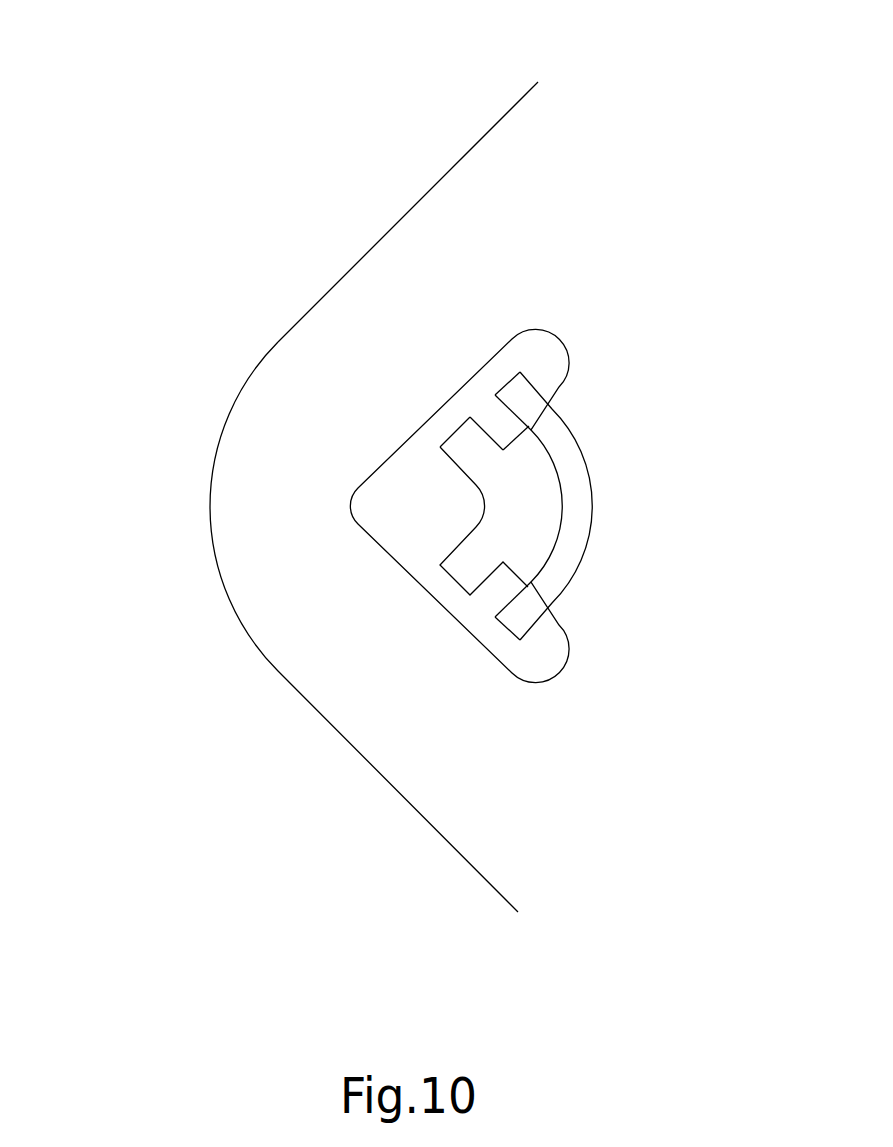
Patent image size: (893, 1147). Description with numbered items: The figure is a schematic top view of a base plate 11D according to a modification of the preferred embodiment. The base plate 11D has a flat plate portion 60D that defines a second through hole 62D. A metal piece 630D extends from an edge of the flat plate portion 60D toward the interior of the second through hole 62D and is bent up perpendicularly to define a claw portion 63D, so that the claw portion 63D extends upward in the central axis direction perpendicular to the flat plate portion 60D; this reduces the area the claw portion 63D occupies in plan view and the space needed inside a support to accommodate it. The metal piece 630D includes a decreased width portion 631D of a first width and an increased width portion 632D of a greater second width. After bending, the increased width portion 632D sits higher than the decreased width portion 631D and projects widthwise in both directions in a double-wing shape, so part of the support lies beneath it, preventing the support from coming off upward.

The base plate 11D is at (467, 132).
The flat plate portion 60D is at (477, 795).
The second through hole 62D is at (440, 507).
The claw portion 63D is at (570, 485).
The metal piece 630D is at (349, 335).
The decreased width portion 631D is at (525, 450).
The increased width portion 632D is at (458, 447).